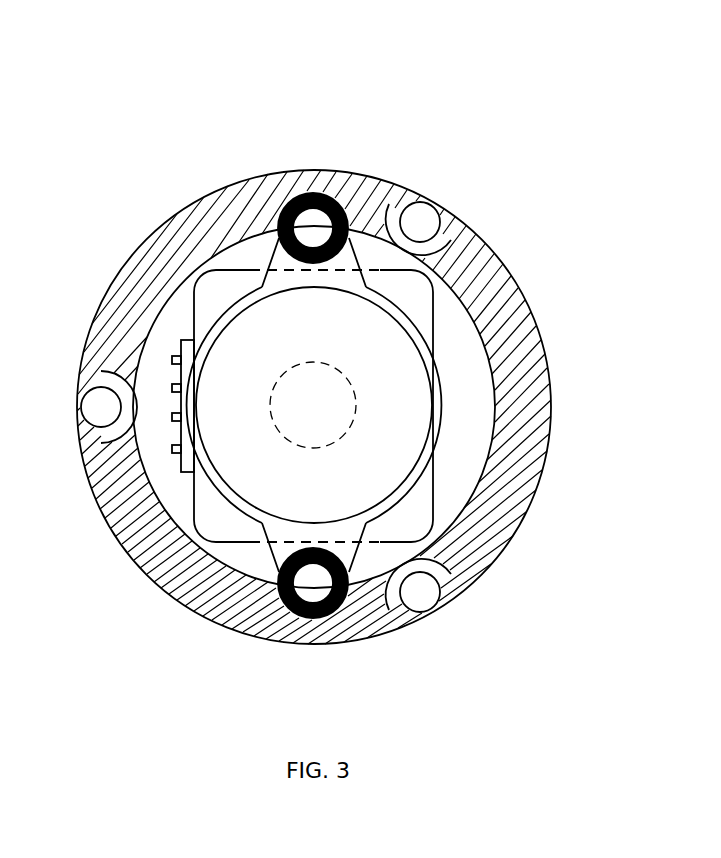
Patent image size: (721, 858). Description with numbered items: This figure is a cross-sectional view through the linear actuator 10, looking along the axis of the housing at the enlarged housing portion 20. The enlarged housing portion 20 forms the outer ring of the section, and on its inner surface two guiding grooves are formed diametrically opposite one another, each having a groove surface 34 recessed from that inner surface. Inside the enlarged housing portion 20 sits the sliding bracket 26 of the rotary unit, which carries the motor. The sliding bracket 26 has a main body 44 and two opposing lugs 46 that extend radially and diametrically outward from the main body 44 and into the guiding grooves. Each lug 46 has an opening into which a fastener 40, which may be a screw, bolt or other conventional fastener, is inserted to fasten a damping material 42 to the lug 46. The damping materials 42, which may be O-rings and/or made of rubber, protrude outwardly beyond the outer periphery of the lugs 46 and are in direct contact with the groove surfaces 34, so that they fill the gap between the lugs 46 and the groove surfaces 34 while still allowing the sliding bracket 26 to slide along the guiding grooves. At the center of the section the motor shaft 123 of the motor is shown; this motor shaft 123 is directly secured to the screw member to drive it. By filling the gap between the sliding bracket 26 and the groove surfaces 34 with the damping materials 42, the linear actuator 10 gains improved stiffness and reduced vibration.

The linear actuator 10 is at (134, 60).
The enlarged housing portion 20 is at (463, 250).
The sliding bracket 26 is at (449, 527).
The groove surfaces 34 is at (278, 228).
The fasteners 40 is at (348, 240).
The damping materials 42 is at (313, 230).
The main body 44 is at (432, 342).
The lugs 46 is at (282, 194).
The motor shaft 123 is at (330, 403).